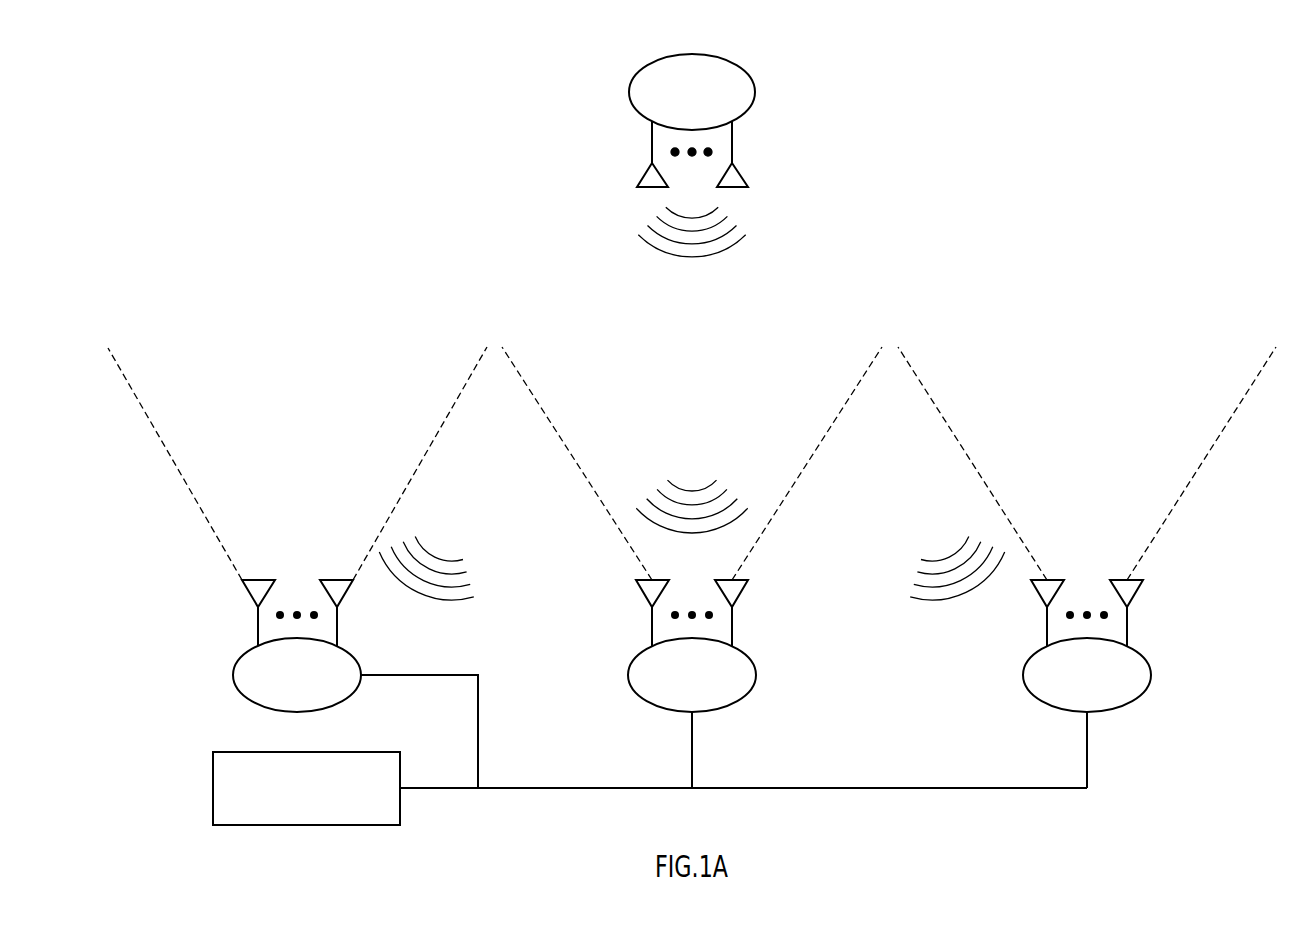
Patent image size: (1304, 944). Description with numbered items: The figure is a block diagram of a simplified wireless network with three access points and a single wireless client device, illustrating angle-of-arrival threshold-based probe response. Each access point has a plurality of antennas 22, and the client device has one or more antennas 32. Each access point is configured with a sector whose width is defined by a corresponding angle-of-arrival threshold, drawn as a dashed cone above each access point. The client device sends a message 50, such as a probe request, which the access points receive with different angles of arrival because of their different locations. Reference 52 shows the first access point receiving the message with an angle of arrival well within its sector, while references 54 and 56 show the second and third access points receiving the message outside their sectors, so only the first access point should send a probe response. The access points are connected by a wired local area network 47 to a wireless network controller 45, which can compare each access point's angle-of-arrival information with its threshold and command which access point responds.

The antennas of the wireless client device 32 is at (748, 174).
The message 50 is at (743, 237).
The reception of message at AP 20(1) 52 is at (709, 530).
The reception of message at AP 20(2) 54 is at (432, 556).
The reception of message at AP 20(3) 56 is at (953, 553).
The antennas of the access points 22 is at (244, 585).
The wireless network controller 45 is at (213, 790).
The wired local area network 47 is at (898, 789).